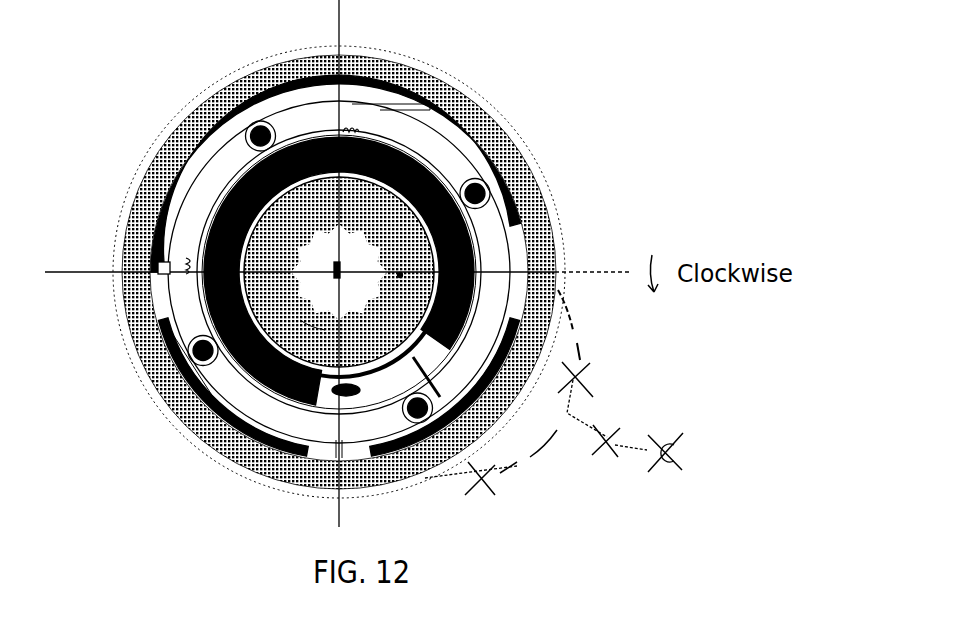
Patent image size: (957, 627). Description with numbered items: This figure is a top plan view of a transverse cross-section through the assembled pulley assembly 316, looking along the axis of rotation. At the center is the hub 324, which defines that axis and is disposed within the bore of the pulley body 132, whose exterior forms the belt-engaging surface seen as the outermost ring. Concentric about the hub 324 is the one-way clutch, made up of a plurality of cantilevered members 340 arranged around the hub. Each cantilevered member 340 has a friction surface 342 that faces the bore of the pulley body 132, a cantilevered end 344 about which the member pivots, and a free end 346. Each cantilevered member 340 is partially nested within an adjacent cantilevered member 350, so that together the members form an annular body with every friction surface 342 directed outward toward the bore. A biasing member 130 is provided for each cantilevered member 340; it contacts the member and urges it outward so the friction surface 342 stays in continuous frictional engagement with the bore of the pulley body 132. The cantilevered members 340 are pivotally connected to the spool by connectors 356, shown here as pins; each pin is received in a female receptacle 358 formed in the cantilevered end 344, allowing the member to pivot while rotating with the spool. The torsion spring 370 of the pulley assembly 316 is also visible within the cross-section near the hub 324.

The biasing member 130 is at (348, 112).
The pulley body 132 is at (386, 478).
The pulley assembly 316 is at (661, 125).
The hub 324 is at (268, 320).
The cantilevered member 340 is at (380, 120).
The friction surface 342 is at (192, 155).
The cantilevered end 344 is at (470, 170).
The free end 346 is at (160, 237).
The adjacent cantilevered member 350 is at (500, 238).
The connector 356 is at (180, 375).
The female receptacle 358 is at (187, 417).
The torsion spring 370 is at (262, 198).